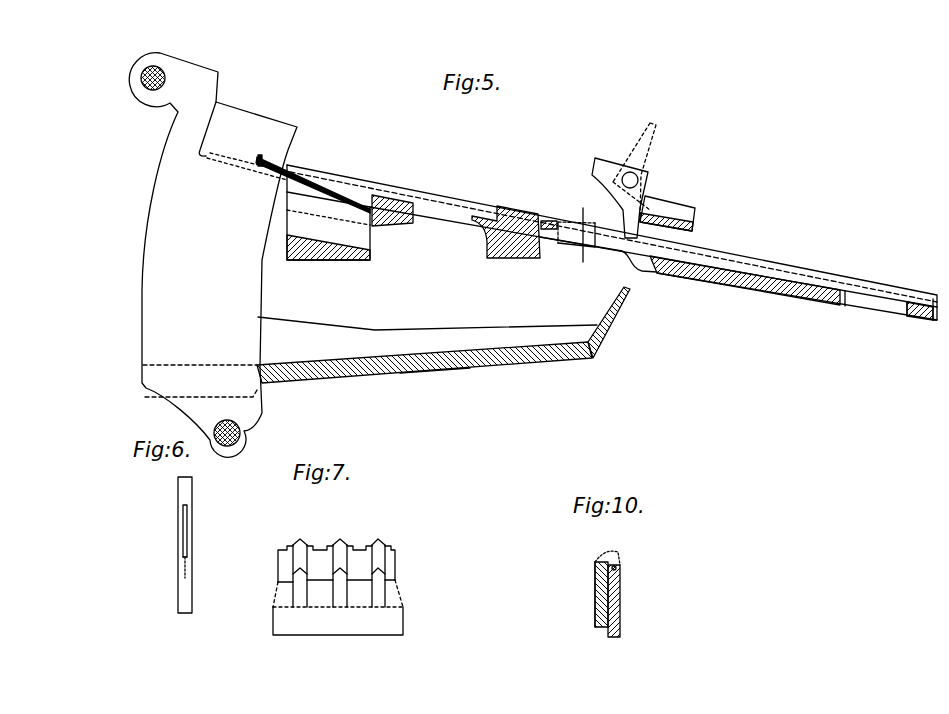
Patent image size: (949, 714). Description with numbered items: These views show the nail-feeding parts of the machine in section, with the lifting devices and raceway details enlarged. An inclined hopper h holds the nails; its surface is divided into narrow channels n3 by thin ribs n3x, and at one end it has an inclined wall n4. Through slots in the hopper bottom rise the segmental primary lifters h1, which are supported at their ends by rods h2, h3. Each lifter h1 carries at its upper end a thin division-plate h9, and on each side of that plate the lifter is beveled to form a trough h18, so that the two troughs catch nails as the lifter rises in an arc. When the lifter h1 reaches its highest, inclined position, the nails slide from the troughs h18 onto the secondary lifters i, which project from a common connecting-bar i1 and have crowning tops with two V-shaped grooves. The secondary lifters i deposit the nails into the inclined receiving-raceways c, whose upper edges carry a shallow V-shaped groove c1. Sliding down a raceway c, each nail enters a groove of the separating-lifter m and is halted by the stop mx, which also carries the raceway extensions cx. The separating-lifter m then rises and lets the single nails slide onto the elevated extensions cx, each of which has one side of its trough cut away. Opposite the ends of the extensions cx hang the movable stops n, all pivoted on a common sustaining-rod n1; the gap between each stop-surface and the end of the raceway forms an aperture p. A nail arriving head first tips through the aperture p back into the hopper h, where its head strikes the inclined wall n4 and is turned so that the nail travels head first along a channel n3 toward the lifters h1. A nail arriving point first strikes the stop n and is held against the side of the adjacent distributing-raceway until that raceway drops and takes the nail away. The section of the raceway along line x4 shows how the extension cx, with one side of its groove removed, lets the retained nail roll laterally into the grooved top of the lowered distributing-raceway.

In FIG. 5, the segmental lifter h1 is at (213, 255).
In FIG. 6, the segmental lifter h1 is at (182, 591).
In FIG. 5, the supporting rod h2 is at (141, 79).
In FIG. 5, the supporting rod h3 is at (247, 434).
In FIG. 5, the division-plate h9 is at (224, 129).
In FIG. 6, the division-plate h9 is at (183, 526).
In FIG. 5, the trough h18 is at (232, 158).
In FIG. 6, the trough h18 is at (188, 553).
In FIG. 5, the inclined hopper h is at (434, 374).
In FIG. 5, the secondary lifter i is at (334, 214).
In FIG. 7, the secondary lifter i is at (378, 594).
In FIG. 5, the connecting-bar i1 is at (341, 257).
In FIG. 7, the connecting-bar i1 is at (396, 623).
In FIG. 5, the receiving-raceway c is at (439, 201).
In FIG. 7, the longitudinal groove c1 is at (328, 548).
In FIG. 10, the longitudinal groove c1 is at (597, 562).
In FIG. 5, the raceway extension cx is at (560, 227).
In FIG. 10, the raceway extension cx is at (620, 575).
In FIG. 5, the separating-lifter m is at (508, 210).
In FIG. 5, the stop mx is at (550, 217).
In FIG. 5, the section line x4 is at (585, 248).
In FIG. 5, the aperture p is at (621, 257).
In FIG. 5, the movable stop n is at (644, 191).
In FIG. 5, the sustaining-rod n1 is at (634, 178).
In FIG. 5, the channel n3 is at (370, 376).
In FIG. 5, the rib n3x is at (427, 336).
In FIG. 5, the inclined wall n4 is at (597, 318).
In FIG. 10, the plate a is at (596, 608).